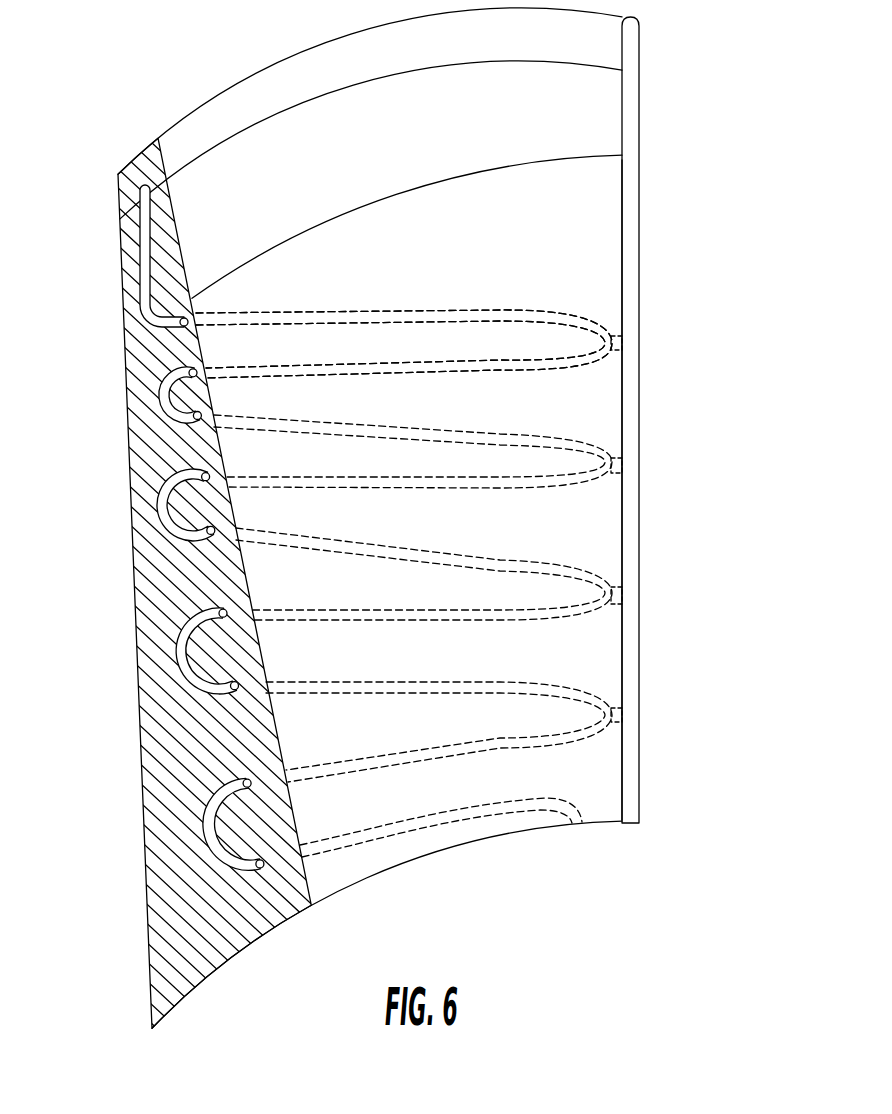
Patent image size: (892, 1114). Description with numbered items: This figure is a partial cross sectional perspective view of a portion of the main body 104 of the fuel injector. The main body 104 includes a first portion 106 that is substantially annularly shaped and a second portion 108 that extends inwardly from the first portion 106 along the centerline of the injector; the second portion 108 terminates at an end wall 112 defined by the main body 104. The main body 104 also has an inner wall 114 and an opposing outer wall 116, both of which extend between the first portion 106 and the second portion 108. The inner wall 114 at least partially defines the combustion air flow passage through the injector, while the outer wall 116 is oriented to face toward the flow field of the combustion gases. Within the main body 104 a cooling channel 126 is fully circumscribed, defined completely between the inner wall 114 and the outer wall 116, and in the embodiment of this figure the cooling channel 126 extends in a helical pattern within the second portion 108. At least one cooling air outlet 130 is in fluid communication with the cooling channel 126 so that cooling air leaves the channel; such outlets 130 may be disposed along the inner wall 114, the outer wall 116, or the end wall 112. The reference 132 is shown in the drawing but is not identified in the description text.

The main body 104 is at (650, 174).
The first portion 106 is at (623, 94).
The second portion 108 is at (602, 262).
The end wall 112 is at (404, 870).
The inner wall 114 is at (593, 647).
The outer wall 116 is at (141, 743).
The cooling channel 126 is at (141, 246).
The cooling air outlet 130 is at (622, 343).
The conduit 132 is at (334, 306).